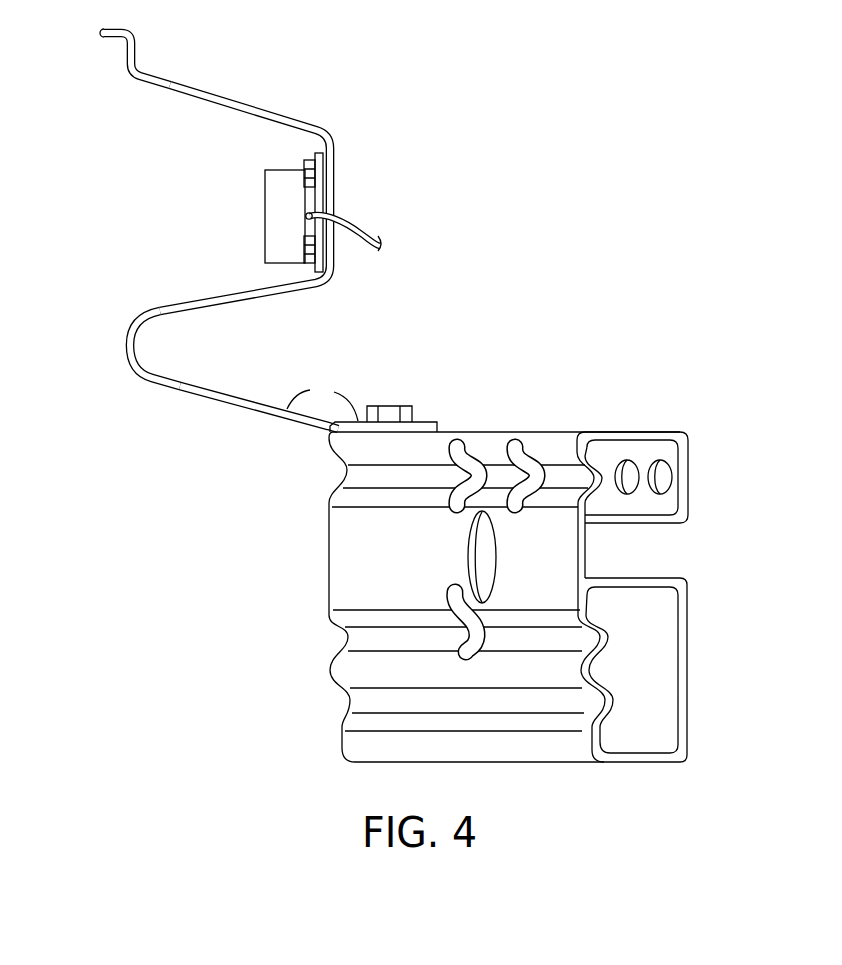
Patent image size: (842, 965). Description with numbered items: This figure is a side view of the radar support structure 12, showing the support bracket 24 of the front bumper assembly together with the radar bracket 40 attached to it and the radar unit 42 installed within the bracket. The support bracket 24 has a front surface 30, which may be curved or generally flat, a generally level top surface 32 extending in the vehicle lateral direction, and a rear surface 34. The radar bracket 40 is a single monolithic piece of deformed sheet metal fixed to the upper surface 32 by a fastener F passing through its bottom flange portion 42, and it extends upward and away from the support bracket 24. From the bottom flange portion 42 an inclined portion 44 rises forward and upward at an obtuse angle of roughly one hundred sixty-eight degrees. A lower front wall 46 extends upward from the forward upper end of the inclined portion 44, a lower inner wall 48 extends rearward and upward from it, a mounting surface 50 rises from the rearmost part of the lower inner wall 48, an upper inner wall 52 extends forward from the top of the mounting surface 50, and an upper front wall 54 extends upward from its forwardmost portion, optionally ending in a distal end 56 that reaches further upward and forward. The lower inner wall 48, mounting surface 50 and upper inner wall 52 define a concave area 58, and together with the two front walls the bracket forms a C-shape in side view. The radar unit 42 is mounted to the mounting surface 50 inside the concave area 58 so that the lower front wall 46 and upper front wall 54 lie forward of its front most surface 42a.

The radar support structure 12 is at (566, 302).
The support bracket 24 is at (636, 424).
The front surface 30 is at (328, 545).
The top surface 32 is at (490, 431).
The rear surface 34 is at (690, 620).
The radar bracket 40 is at (345, 170).
The radar unit 42 is at (282, 185).
The front most surface 42a is at (265, 233).
The inclined portion 44 is at (226, 392).
The lower front wall 46 is at (125, 351).
The lower inner wall 48 is at (172, 307).
The mounting surface 50 is at (322, 198).
The upper inner wall 52 is at (204, 107).
The upper front wall 54 is at (126, 68).
The distal end 56 is at (99, 32).
The concave area 58 is at (208, 298).
The fastener F is at (386, 404).